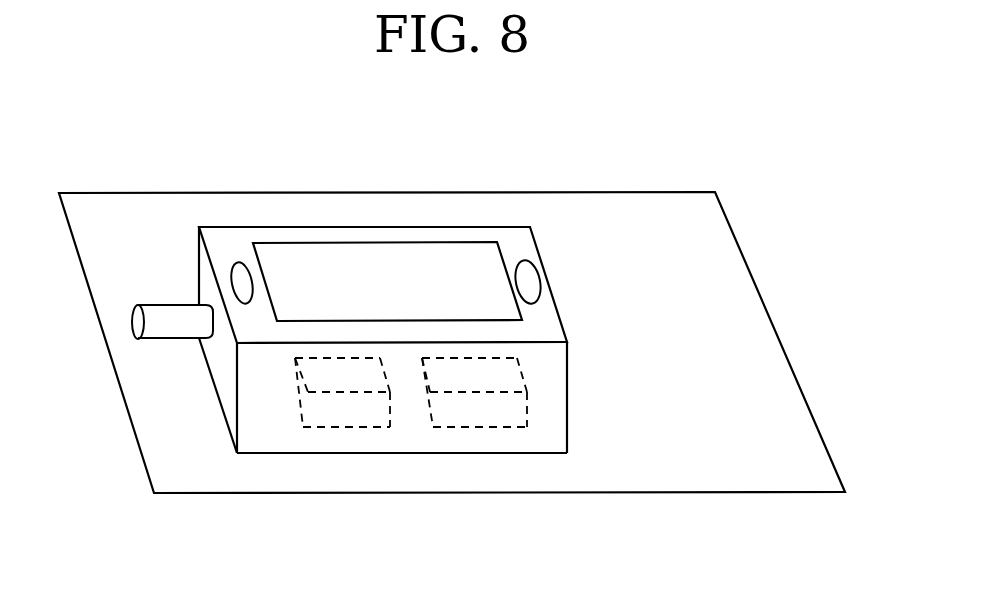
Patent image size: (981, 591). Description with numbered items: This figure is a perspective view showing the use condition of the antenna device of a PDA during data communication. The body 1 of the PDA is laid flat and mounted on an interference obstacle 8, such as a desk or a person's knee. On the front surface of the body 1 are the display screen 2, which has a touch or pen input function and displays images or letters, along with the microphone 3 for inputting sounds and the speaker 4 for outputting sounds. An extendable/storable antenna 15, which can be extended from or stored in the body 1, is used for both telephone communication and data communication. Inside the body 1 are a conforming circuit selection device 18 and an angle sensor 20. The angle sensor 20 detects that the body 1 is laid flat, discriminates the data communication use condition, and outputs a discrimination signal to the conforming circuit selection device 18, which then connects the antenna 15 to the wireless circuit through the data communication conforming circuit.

The body 1 is at (567, 407).
The display screen 2 is at (340, 258).
The microphone 3 is at (527, 285).
The speaker 4 is at (235, 262).
The interference obstacle 8 is at (725, 242).
The extendable/storable antenna 15 is at (168, 340).
The conforming circuit selection device 18 is at (343, 427).
The angle sensor 20 is at (483, 427).